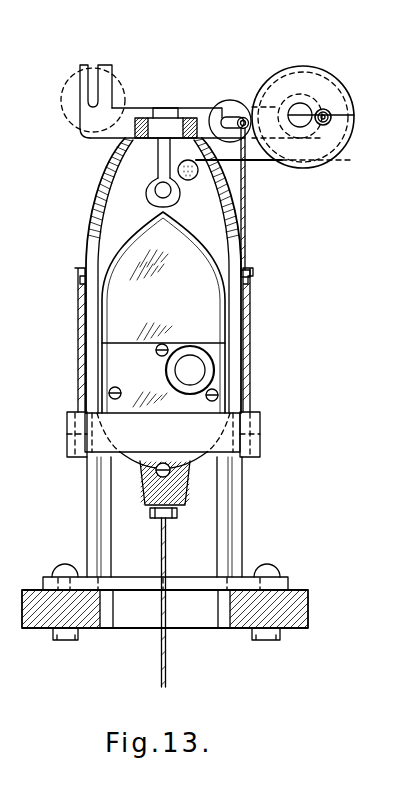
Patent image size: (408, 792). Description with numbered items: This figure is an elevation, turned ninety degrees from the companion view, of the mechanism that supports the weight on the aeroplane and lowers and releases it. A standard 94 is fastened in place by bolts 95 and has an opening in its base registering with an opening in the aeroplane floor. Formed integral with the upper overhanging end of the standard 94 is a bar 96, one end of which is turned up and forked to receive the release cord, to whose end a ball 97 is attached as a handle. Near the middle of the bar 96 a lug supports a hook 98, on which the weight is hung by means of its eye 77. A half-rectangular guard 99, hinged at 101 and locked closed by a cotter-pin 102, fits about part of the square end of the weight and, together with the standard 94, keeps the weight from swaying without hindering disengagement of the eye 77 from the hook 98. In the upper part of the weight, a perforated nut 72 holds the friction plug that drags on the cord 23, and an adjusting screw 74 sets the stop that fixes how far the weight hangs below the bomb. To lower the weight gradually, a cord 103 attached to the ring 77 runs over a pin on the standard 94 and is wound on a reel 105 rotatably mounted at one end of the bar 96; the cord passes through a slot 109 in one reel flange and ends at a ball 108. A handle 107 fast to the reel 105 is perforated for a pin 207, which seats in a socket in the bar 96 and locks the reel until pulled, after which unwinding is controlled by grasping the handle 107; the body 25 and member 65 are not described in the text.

The cord 23 is at (168, 666).
The tank 25 is at (163, 275).
The inner casing 65 is at (204, 405).
The perforated nut 72 is at (178, 513).
The adjusting screw 74 is at (196, 370).
The eye 77 is at (148, 190).
The standard 94 is at (233, 515).
The bolts 95 is at (68, 576).
The bar 96 is at (186, 108).
The ball 97 is at (96, 92).
The hook 98 is at (158, 162).
The half-rectangular guard 99 is at (238, 470).
The hinge 101 is at (247, 410).
The cotter-pin 102 is at (80, 399).
The cord 103 is at (246, 162).
The reel 105 is at (300, 78).
The handle 107 is at (234, 114).
The ball 108 is at (325, 108).
The slot 109 is at (341, 110).
The pin 207 is at (222, 116).